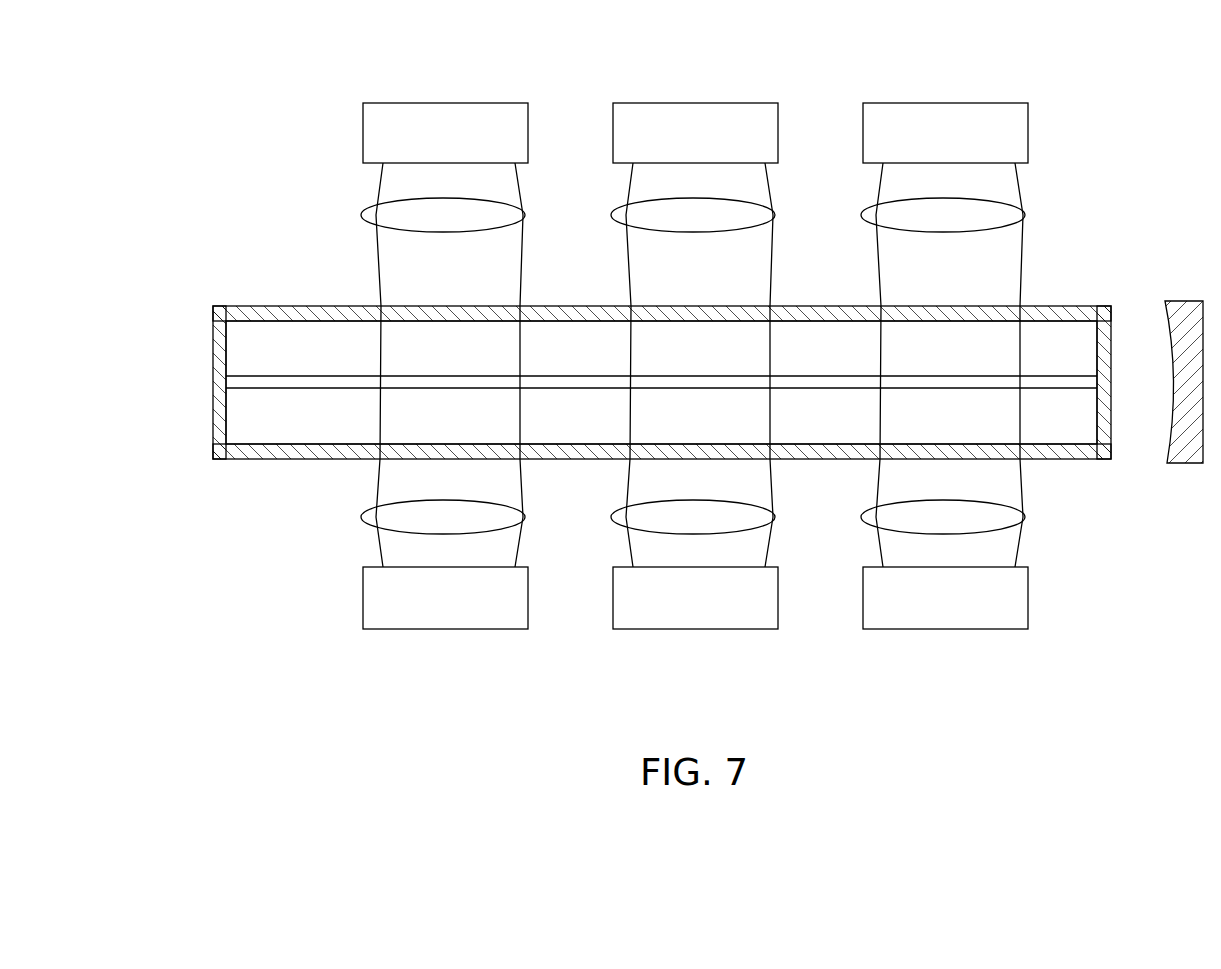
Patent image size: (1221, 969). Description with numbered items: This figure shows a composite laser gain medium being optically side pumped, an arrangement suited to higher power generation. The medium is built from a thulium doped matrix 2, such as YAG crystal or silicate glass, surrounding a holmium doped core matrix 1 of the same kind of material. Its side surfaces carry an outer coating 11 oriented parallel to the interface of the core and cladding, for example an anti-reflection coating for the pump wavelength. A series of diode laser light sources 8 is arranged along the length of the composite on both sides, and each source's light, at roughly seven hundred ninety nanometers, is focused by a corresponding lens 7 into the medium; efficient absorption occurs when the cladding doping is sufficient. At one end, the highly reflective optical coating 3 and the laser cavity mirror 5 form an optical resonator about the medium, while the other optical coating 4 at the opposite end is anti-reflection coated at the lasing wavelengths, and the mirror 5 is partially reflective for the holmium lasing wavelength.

The holmium doped core matrix 1 is at (1055, 382).
The thulium doped matrix 2 is at (818, 407).
The optical coating 3 is at (213, 343).
The optical coating 4 is at (1112, 442).
The laser cavity mirror 5 is at (1188, 298).
The lens 7 is at (537, 205).
The light source 8 is at (402, 127).
The outer coating 11 is at (292, 307).